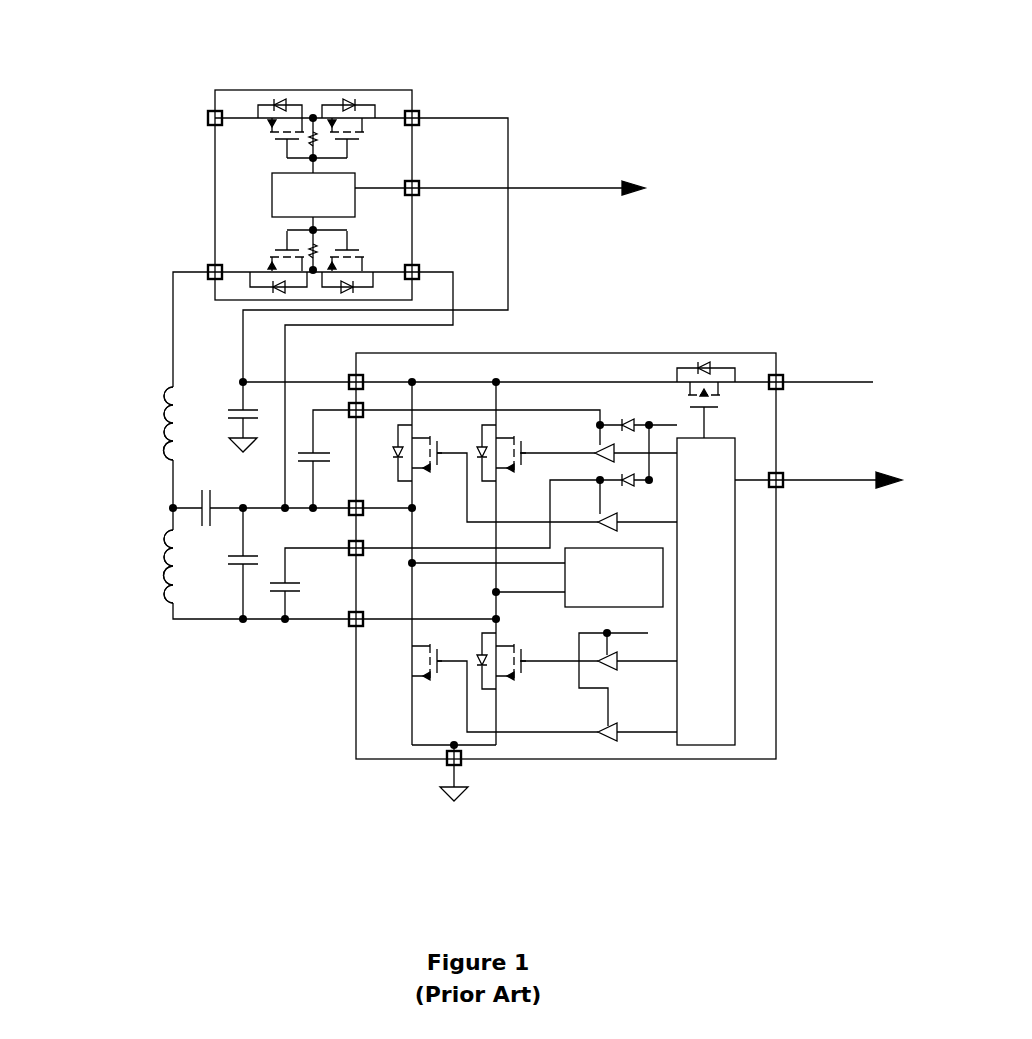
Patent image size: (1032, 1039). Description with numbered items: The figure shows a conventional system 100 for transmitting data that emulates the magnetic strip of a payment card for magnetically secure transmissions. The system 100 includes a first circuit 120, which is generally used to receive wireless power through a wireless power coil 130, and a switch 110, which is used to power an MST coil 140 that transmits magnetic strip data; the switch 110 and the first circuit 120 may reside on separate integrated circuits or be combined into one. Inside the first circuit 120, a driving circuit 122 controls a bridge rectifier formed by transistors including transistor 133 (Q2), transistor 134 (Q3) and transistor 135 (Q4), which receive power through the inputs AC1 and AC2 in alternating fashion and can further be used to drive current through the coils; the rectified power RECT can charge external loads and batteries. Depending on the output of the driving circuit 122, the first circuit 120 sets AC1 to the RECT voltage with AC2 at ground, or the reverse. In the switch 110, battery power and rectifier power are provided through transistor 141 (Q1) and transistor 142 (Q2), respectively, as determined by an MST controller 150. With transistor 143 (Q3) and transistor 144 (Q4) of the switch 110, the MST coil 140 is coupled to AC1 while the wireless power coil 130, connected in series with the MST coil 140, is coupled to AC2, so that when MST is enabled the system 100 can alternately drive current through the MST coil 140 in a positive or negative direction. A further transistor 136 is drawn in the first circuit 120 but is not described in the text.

The system 100 is at (95, 60).
The switch 110 is at (415, 90).
The first circuit 120 is at (722, 333).
The driving circuit 122 is at (723, 663).
The wireless power coil 130 is at (165, 580).
The transistor 133 is at (434, 449).
The transistor 134 is at (520, 435).
The transistor 135 is at (447, 655).
The transistor Q4 of IC2 136 is at (519, 660).
The MST coil 140 is at (163, 417).
The transistor 141 is at (278, 136).
The transistor 142 is at (352, 139).
The transistor 143 is at (282, 260).
The transistor 144 is at (337, 260).
The MST controller 150 is at (275, 190).